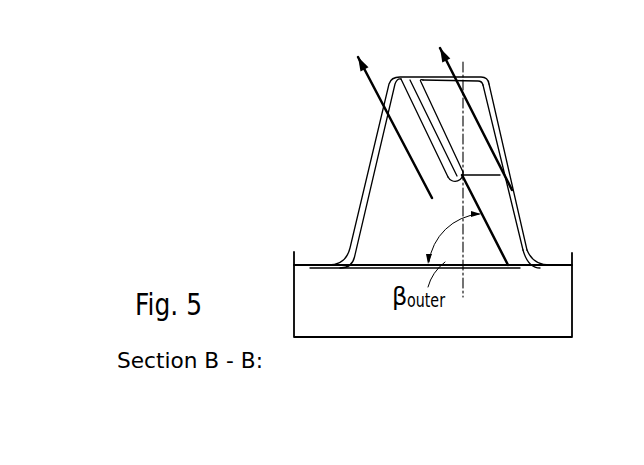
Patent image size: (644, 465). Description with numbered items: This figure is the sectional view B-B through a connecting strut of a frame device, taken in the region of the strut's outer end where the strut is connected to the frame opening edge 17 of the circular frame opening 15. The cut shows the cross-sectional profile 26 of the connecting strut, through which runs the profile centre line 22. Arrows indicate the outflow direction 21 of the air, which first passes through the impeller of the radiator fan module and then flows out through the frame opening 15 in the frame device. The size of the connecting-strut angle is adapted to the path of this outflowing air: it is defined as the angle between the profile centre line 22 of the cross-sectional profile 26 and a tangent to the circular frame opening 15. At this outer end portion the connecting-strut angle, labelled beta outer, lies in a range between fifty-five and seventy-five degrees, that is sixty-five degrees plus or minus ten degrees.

The circular frame opening 15 is at (529, 242).
The frame opening edge 17 is at (529, 258).
The outflow direction 21 is at (417, 172).
The profile centre line 22 is at (398, 98).
The cross-sectional profile 26 is at (408, 115).